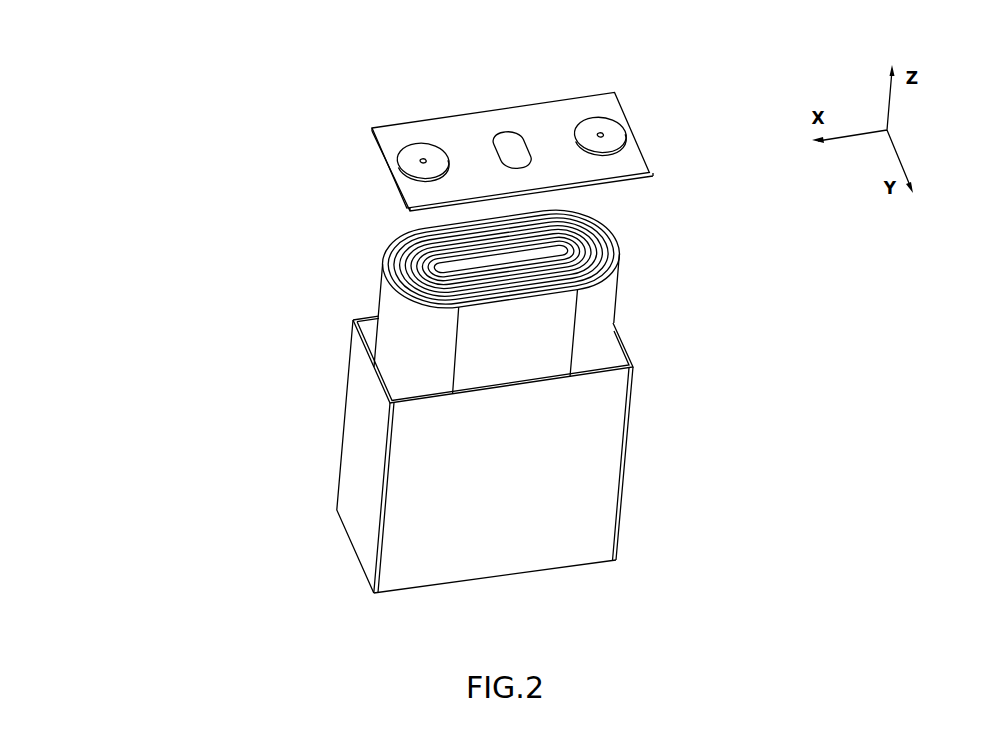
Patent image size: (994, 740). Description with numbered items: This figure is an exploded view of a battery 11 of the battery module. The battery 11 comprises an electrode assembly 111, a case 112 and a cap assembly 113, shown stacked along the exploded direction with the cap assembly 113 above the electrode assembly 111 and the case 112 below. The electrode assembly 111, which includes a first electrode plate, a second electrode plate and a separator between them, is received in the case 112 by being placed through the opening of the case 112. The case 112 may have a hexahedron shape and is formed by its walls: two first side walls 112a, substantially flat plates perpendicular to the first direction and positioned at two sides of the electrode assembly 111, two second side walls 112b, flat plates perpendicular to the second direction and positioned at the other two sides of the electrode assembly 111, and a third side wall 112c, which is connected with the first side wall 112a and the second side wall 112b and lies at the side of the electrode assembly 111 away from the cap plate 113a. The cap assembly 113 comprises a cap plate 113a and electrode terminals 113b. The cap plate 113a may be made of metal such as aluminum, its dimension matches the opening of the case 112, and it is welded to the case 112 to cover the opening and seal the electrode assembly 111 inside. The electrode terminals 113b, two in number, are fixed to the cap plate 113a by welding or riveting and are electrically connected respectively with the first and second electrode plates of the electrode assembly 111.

The battery 11 is at (118, 178).
The electrode assembly 111 is at (603, 292).
The case 112 is at (220, 453).
The first side wall 112a is at (358, 463).
The second side wall 112b is at (395, 488).
The third side wall 112c is at (410, 592).
The cap assembly 113 is at (560, 40).
The cap plate 113a is at (473, 118).
The electrode terminal 113b is at (415, 147).